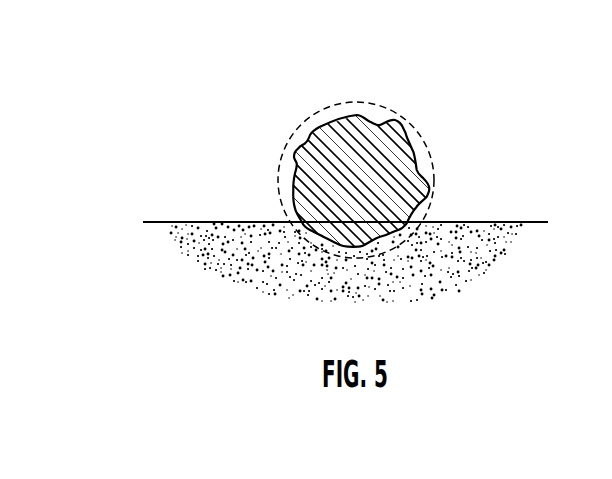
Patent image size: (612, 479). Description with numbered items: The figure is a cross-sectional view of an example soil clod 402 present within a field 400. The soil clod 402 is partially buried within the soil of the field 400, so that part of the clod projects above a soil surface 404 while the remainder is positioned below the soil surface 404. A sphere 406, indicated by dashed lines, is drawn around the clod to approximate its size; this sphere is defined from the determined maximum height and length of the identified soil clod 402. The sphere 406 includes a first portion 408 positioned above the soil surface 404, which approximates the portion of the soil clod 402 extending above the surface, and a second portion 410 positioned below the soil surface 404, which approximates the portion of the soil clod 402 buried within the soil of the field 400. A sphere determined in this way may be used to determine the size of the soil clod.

The field 400 is at (124, 88).
The soil clod 402 is at (388, 124).
The soil surface 404 is at (162, 222).
The sphere 406 is at (325, 98).
The first portion 408 is at (371, 102).
The second portion 410 is at (358, 258).